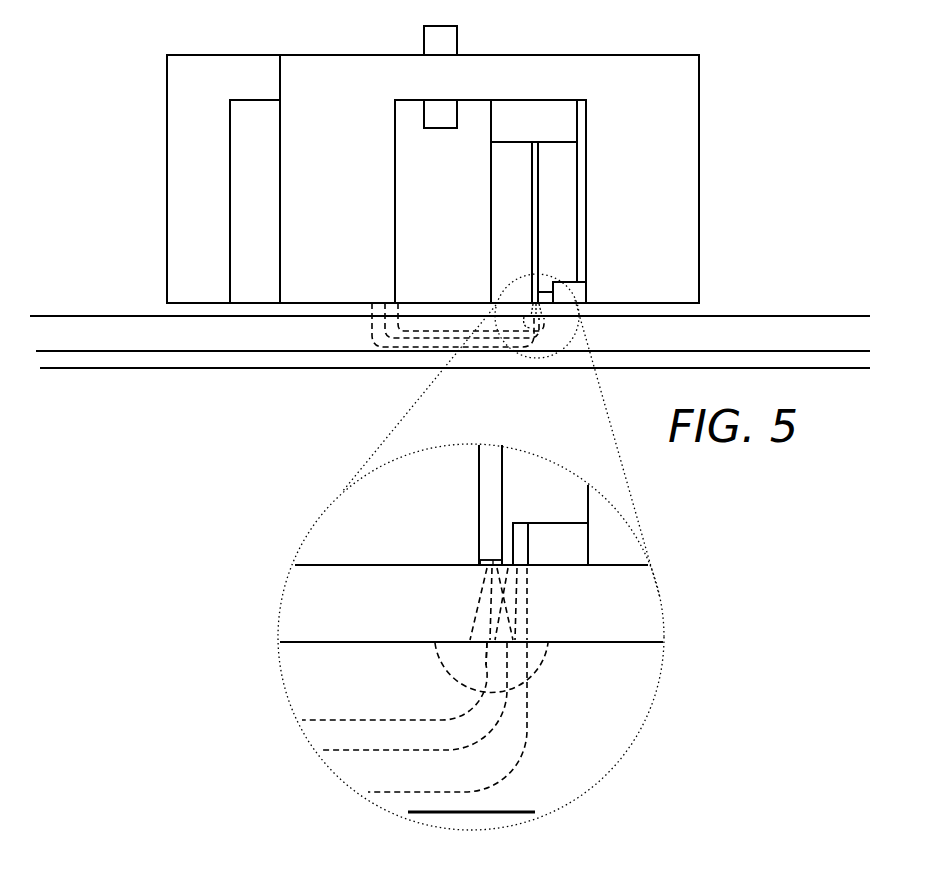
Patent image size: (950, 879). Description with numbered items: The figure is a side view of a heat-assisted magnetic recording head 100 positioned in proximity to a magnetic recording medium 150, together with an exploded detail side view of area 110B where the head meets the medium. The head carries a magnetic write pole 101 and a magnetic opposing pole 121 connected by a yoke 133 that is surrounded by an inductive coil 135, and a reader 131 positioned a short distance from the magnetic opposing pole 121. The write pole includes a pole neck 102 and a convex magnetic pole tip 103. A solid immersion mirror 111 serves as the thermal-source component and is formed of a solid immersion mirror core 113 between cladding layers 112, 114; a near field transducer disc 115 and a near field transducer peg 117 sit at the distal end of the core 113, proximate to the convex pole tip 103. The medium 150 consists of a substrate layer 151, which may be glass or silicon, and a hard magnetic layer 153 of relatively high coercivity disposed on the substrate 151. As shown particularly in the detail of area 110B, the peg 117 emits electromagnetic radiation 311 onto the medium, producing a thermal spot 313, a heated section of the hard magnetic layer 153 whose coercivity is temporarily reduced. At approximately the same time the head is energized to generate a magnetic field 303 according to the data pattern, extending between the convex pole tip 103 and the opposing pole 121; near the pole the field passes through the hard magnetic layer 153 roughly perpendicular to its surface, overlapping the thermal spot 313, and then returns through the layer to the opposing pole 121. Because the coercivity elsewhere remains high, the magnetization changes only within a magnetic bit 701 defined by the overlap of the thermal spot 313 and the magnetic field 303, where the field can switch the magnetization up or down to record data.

The heat-assisted magnetic recording head 100 is at (740, 100).
The magnetic write pole 101 is at (700, 263).
The pole neck 102 is at (555, 283).
The convex magnetic pole tip 103 is at (538, 300).
The area 110B is at (570, 328).
The solid immersion mirror 111 is at (490, 228).
The solid immersion mirror cladding layer 112 is at (490, 200).
The solid immersion mirror core 113 is at (532, 266).
The solid immersion mirror cladding layer 114 is at (577, 200).
The near field transducer disc 115 is at (490, 125).
The near field transducer peg 117 is at (491, 562).
The magnetic opposing pole 121 is at (278, 247).
The reader 131 is at (165, 168).
The yoke 133 is at (367, 53).
The inductive coil 135 is at (458, 110).
The magnetic recording medium 150 is at (98, 314).
The substrate layer 151 is at (152, 368).
The hard magnetic layer 153 is at (212, 352).
The magnetic field 303 is at (370, 335).
The electromagnetic radiation 311 is at (478, 603).
The thermal spot 313 is at (445, 680).
The magnetic bit 701 is at (480, 667).